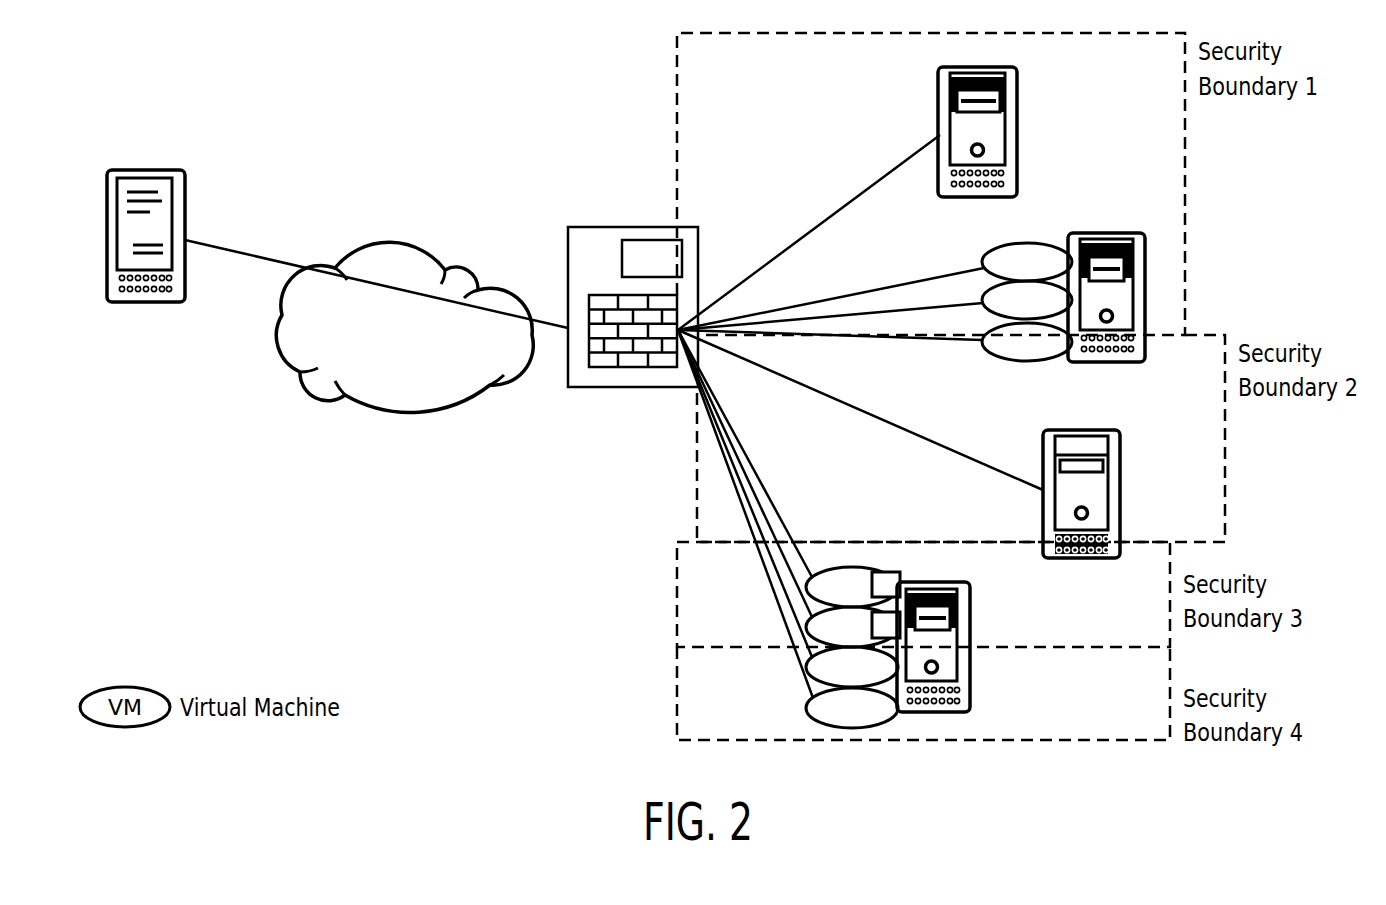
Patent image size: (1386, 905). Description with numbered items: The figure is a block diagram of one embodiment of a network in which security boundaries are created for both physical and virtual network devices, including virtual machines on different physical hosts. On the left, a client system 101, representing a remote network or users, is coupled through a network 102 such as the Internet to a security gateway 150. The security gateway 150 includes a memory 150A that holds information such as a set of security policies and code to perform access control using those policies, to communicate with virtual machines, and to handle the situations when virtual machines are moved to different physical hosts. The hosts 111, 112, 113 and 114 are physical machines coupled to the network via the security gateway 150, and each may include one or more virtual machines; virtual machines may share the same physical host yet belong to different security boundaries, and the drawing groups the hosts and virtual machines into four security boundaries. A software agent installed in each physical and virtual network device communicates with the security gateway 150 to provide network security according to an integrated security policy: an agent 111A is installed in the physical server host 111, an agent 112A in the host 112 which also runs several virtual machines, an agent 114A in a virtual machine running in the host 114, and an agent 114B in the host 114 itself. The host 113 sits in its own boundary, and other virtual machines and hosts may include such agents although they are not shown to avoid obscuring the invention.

The client system 101 is at (147, 168).
The network 102 is at (404, 365).
The security gateway 150 is at (634, 311).
The memory 150A is at (655, 260).
The host 111 is at (947, 132).
The agent 111A is at (960, 92).
The host 112 is at (1114, 276).
The agent 112A is at (1101, 257).
The host 113 is at (1120, 496).
The host 114 is at (968, 614).
The agent 114A is at (889, 612).
The agent 114B is at (940, 605).